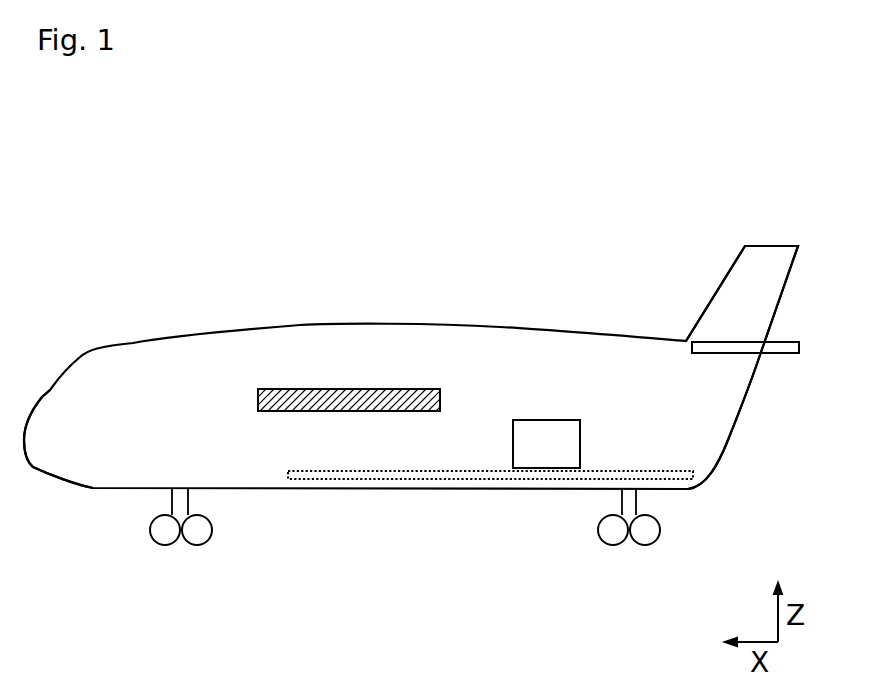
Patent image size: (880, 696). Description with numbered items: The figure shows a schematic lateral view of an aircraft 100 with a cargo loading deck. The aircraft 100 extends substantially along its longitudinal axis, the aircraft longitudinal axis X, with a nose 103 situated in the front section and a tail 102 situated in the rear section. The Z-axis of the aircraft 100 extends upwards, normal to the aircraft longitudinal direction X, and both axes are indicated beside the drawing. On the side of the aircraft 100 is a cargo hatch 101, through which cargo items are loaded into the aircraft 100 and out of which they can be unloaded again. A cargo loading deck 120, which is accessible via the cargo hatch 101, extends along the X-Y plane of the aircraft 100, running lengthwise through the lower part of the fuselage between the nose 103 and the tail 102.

The aircraft 100 is at (278, 296).
The cargo hatch 101 is at (530, 447).
The tail 102 is at (730, 403).
The nose 103 is at (47, 438).
The cargo loading deck 120 is at (455, 480).